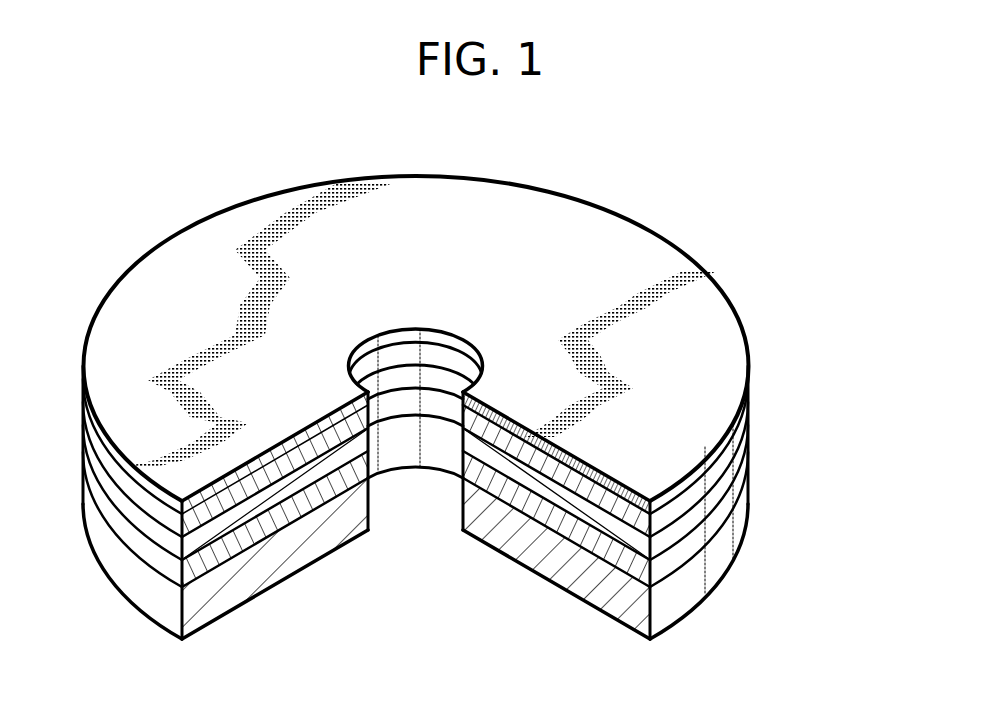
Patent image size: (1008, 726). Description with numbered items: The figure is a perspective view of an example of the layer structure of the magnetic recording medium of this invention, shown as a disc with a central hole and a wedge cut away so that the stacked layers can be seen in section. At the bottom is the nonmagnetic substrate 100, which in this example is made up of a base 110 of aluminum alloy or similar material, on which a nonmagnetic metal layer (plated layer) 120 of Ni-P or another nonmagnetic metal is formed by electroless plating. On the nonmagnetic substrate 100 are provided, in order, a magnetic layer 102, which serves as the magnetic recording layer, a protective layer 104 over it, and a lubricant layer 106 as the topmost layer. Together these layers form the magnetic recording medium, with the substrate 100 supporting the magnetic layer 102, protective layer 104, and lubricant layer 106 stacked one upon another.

The nonmagnetic substrate 100 is at (839, 527).
The base 110 is at (648, 608).
The nonmagnetic metal layer (plated layer) 120 is at (648, 570).
The magnetic layer 102 is at (648, 545).
The protective layer 104 is at (648, 523).
The lubricant layer 106 is at (650, 492).